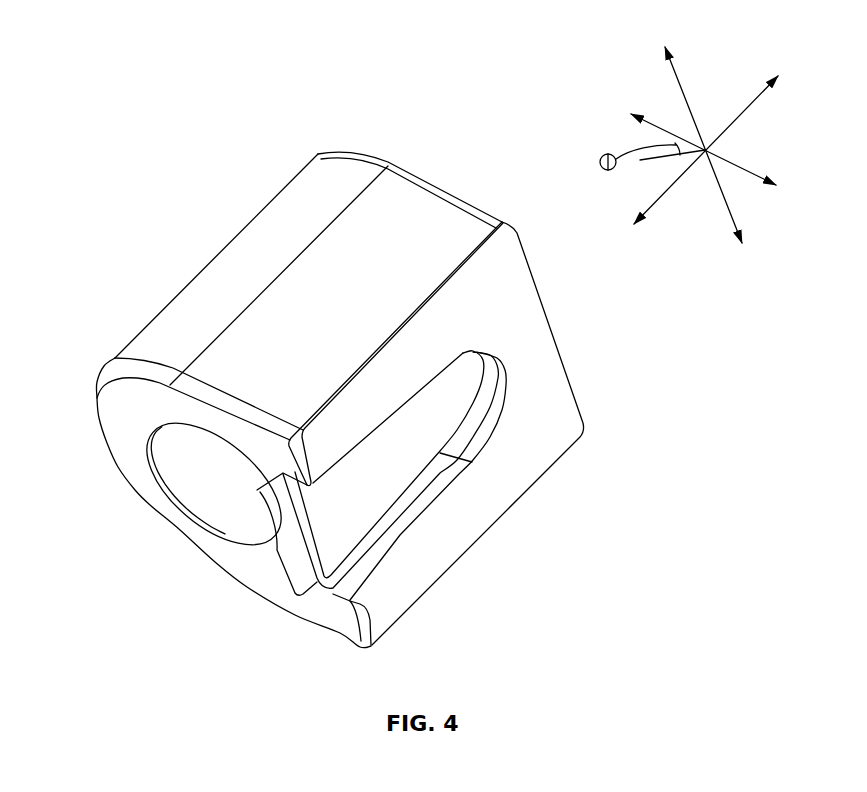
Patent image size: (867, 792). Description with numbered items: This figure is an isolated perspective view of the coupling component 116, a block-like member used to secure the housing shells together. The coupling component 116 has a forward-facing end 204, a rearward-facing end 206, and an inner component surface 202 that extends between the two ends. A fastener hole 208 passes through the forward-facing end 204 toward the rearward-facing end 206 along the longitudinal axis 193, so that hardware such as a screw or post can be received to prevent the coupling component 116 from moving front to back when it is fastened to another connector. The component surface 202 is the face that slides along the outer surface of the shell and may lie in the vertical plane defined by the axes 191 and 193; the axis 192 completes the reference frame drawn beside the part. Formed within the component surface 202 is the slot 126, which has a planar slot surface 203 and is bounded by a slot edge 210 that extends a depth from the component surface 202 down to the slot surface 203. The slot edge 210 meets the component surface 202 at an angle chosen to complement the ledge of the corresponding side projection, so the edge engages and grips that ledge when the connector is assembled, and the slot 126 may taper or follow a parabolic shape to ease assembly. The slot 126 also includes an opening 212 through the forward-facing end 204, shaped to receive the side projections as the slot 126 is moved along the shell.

The coupling component 116 is at (321, 153).
The rearward-facing end 206 is at (487, 193).
The inner component surface 202 is at (508, 320).
The slot surface 203 is at (424, 455).
The forward-facing end 204 is at (130, 455).
The fastener hole 208 is at (205, 494).
The slot edge 210 is at (422, 502).
The opening 212 is at (280, 553).
The slot 126 is at (371, 522).
The axis 191 is at (683, 88).
The axis 192 is at (658, 123).
The longitudinal axis 193 is at (658, 200).